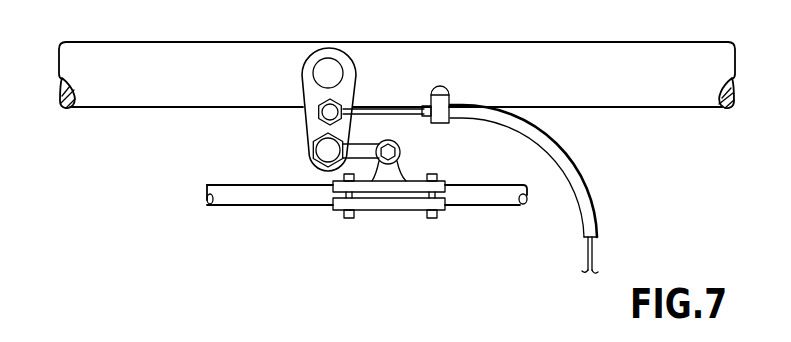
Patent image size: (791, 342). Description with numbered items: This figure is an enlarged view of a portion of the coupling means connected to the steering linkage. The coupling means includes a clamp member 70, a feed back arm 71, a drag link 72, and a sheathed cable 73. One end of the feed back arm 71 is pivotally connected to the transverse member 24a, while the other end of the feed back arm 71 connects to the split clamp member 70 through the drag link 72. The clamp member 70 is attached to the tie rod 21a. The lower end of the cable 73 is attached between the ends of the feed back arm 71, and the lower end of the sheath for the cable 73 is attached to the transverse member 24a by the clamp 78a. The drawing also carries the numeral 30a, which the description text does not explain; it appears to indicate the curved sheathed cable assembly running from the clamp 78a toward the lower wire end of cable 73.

The transverse member 24a is at (564, 41).
The tie rod 21a is at (490, 205).
The feed back arm 71 is at (311, 126).
The drag link 72 is at (363, 148).
The clamp member 70 is at (397, 170).
The clamp 78a is at (440, 124).
The cable 30a is at (597, 174).
The sheathed cable 73 is at (593, 253).